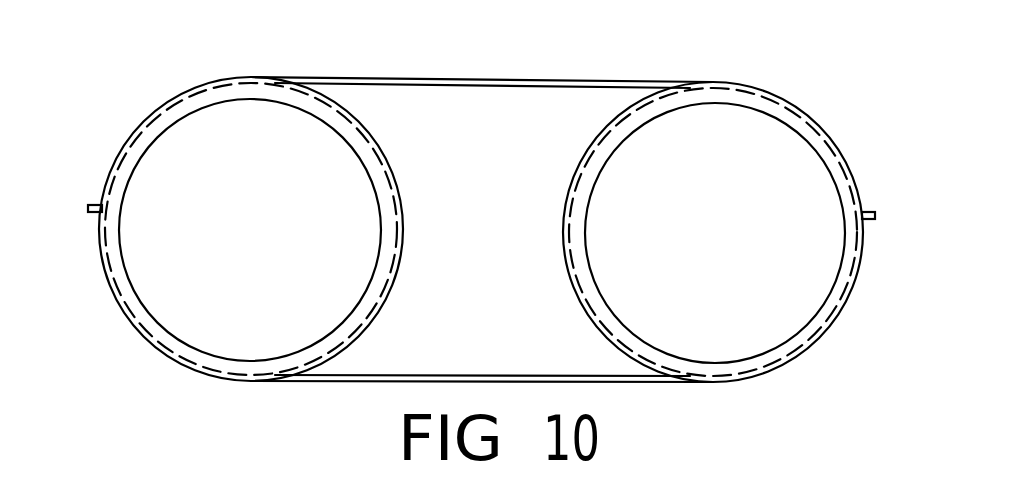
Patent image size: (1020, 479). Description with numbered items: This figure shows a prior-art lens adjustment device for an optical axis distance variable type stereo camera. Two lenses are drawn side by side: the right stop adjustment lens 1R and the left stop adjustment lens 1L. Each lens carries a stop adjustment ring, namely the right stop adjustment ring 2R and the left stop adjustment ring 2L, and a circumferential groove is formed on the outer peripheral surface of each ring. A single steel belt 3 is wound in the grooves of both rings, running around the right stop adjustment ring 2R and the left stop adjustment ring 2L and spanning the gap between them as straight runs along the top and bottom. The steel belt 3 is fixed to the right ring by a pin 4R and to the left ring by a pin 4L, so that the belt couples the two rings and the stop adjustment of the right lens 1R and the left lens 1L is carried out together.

The right stop adjustment lens 1R is at (193, 145).
The left stop adjustment lens 1L is at (765, 133).
The right stop adjustment ring 2R is at (352, 122).
The left stop adjustment ring 2L is at (628, 107).
The steel belt 3 is at (485, 81).
The right pin 4R is at (96, 205).
The left pin 4L is at (870, 212).